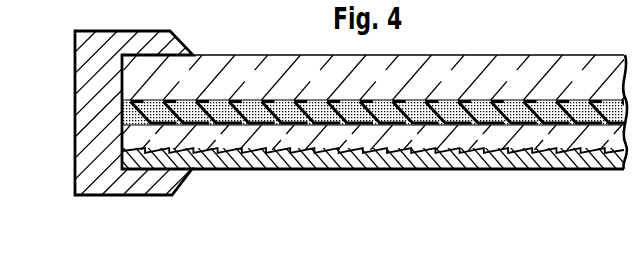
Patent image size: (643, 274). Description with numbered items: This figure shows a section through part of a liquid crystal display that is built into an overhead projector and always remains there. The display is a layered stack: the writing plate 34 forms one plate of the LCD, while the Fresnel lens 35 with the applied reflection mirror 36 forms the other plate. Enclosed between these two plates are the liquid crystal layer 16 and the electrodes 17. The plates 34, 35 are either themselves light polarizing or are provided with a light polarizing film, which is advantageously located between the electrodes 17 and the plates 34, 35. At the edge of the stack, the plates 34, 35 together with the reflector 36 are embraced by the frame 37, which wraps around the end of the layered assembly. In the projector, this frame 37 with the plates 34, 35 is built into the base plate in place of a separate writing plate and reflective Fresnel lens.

The liquid crystal layer 16 is at (373, 112).
The electrodes 17 is at (498, 104).
The writing plate 34 is at (242, 68).
The Fresnel lens 35 is at (233, 168).
The reflection mirror 36 is at (282, 163).
The frame 37 is at (132, 182).